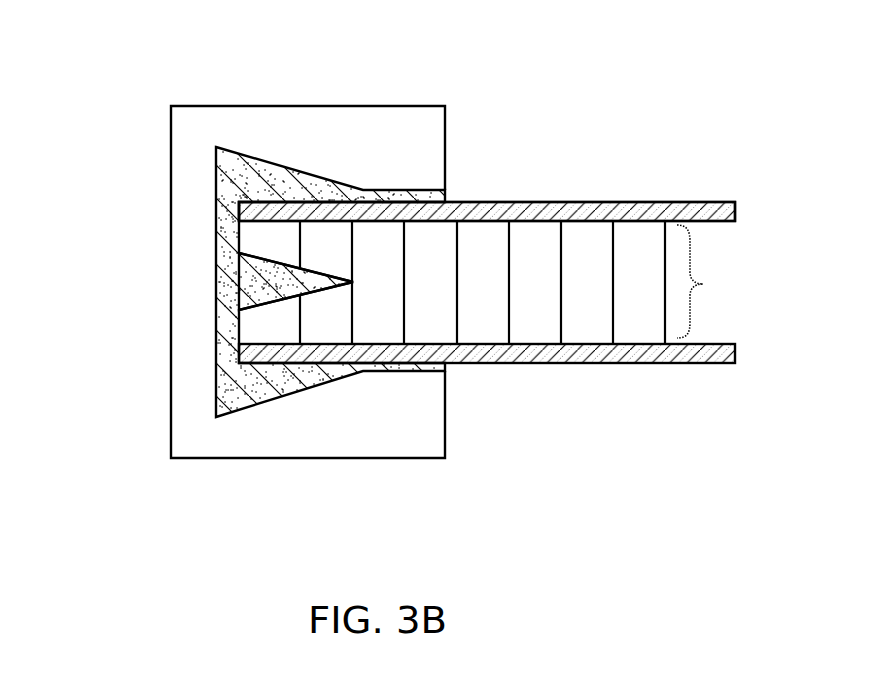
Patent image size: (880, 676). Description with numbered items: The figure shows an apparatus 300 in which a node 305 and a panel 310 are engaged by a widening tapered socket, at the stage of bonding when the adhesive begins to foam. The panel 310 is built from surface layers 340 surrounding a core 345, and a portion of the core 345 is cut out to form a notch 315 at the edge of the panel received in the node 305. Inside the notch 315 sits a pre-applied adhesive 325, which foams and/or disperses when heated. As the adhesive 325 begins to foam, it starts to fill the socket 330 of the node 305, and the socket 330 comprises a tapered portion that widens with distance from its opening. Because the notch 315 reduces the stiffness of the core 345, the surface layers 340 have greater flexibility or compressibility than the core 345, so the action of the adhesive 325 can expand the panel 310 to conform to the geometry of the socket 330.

The apparatus 300 is at (634, 139).
The node 305 is at (212, 106).
The panel 310 is at (561, 310).
The notch 315 is at (230, 296).
The pre-applied adhesive 325 is at (250, 212).
The socket 330 is at (238, 173).
The surface layers 340 is at (538, 213).
The core 345 is at (718, 281).